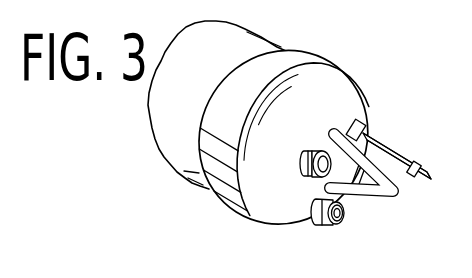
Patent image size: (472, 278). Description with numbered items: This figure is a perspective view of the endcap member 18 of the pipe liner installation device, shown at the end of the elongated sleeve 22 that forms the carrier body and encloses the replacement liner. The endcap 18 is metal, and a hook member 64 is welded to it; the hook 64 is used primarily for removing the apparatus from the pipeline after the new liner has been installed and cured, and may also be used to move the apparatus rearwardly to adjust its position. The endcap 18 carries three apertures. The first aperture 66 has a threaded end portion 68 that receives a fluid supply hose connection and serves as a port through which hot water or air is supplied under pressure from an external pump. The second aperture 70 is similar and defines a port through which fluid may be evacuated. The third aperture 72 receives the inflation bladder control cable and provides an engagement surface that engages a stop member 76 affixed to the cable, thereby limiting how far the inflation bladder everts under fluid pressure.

The endcap member 18 is at (300, 62).
The sleeve 22 is at (235, 40).
The hook member 64 is at (371, 198).
The first aperture 66 is at (316, 218).
The threaded end portion 68 is at (333, 226).
The second aperture 70 is at (302, 156).
The third aperture 72 is at (365, 127).
The stop member 76 is at (414, 176).